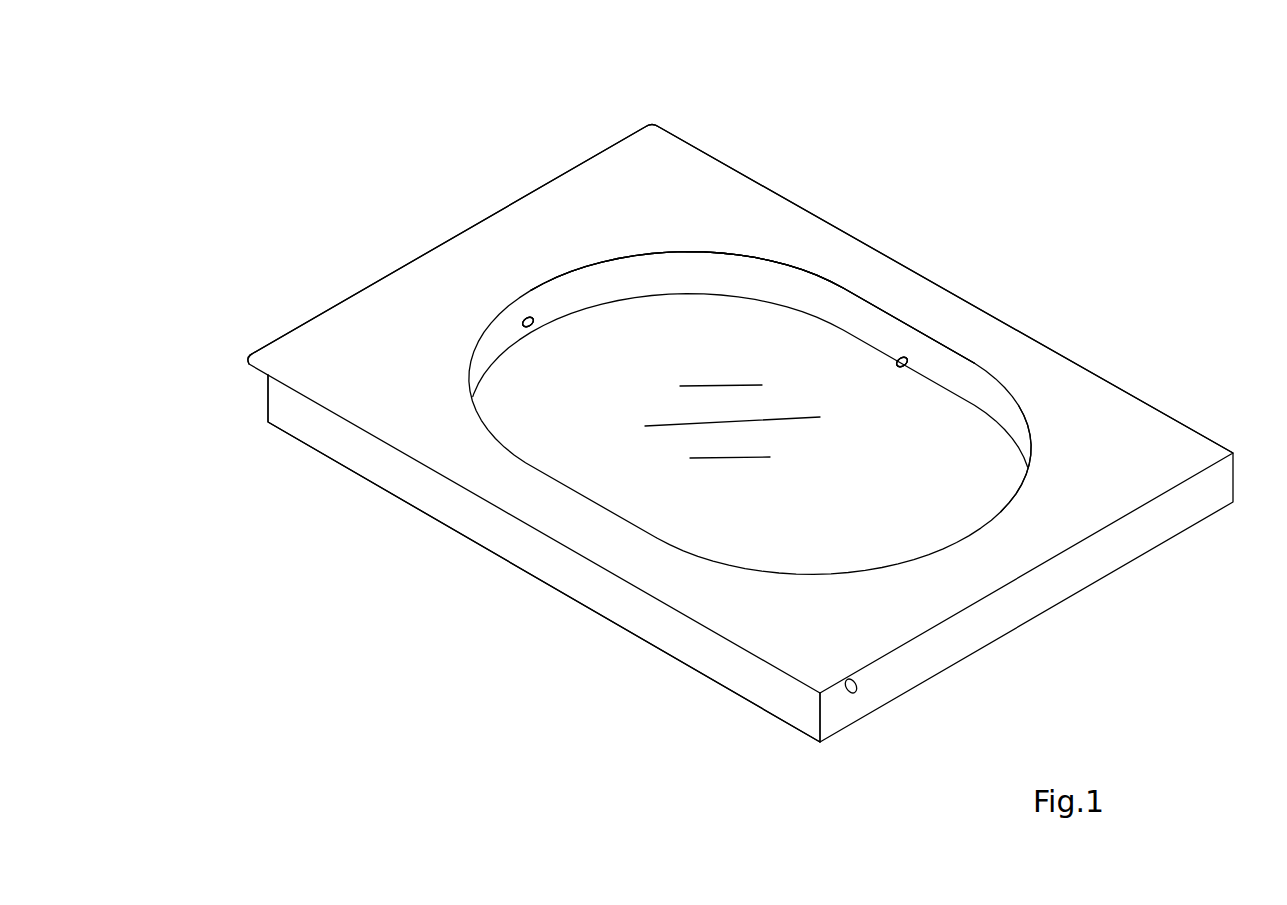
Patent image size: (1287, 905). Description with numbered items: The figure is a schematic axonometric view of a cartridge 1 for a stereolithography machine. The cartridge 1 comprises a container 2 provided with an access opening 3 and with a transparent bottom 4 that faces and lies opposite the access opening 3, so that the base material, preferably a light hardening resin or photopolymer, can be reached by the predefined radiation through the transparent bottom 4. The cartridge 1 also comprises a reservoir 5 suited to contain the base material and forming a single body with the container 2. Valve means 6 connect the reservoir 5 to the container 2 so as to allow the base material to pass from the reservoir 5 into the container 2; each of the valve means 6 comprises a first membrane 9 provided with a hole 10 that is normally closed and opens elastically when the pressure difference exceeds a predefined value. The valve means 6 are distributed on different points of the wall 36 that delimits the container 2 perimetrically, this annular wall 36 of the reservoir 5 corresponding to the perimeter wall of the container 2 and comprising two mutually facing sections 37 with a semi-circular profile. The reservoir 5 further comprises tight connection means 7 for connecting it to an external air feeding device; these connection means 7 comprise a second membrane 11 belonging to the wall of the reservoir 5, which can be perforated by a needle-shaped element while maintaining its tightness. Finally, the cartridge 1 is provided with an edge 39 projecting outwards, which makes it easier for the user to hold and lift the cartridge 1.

The cartridge 1 is at (1194, 273).
The container 2 is at (648, 269).
The access opening 3 is at (844, 273).
The transparent bottom 4 is at (628, 467).
The reservoir 5 is at (387, 393).
The valve means 6 is at (522, 299).
The tight connection means 7 is at (850, 721).
The first membrane 9 is at (524, 320).
The hole 10 is at (539, 341).
The second membrane 11 is at (858, 689).
The annular wall 36 is at (735, 275).
The sections with semi-circular profile 37 is at (587, 245).
The edge 39 is at (237, 385).